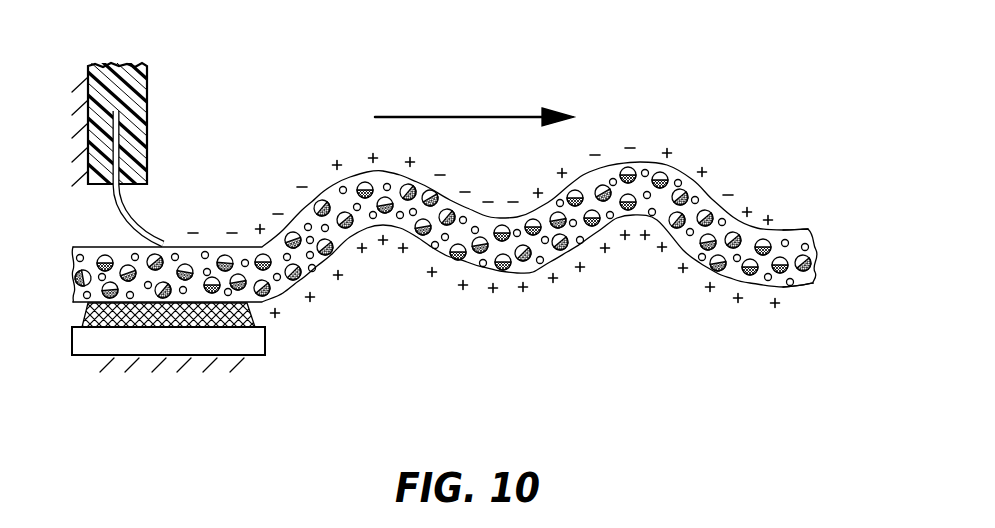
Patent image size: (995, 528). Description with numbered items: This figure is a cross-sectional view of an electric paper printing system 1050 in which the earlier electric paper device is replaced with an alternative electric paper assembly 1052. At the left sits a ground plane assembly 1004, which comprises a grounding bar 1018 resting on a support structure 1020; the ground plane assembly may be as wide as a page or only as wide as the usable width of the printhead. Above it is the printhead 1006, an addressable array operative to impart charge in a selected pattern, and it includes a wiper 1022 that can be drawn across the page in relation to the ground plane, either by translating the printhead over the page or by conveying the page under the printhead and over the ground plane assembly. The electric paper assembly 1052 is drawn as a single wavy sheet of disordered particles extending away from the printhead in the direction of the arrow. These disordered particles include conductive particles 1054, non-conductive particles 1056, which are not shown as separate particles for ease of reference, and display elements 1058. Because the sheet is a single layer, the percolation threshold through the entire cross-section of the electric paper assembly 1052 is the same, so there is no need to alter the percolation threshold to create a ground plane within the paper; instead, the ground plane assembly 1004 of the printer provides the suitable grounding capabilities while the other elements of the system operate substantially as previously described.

The ground plane assembly 1004 is at (209, 369).
The printhead 1006 is at (145, 143).
The grounding bar 1018 is at (253, 322).
The support structure 1020 is at (257, 343).
The wiper 1022 is at (126, 209).
The system 1050 is at (471, 177).
The electric paper assembly 1052 is at (867, 212).
The conductive particles 1054 is at (611, 180).
The non-conductive particles 1056 is at (843, 268).
The display elements 1058 is at (293, 235).